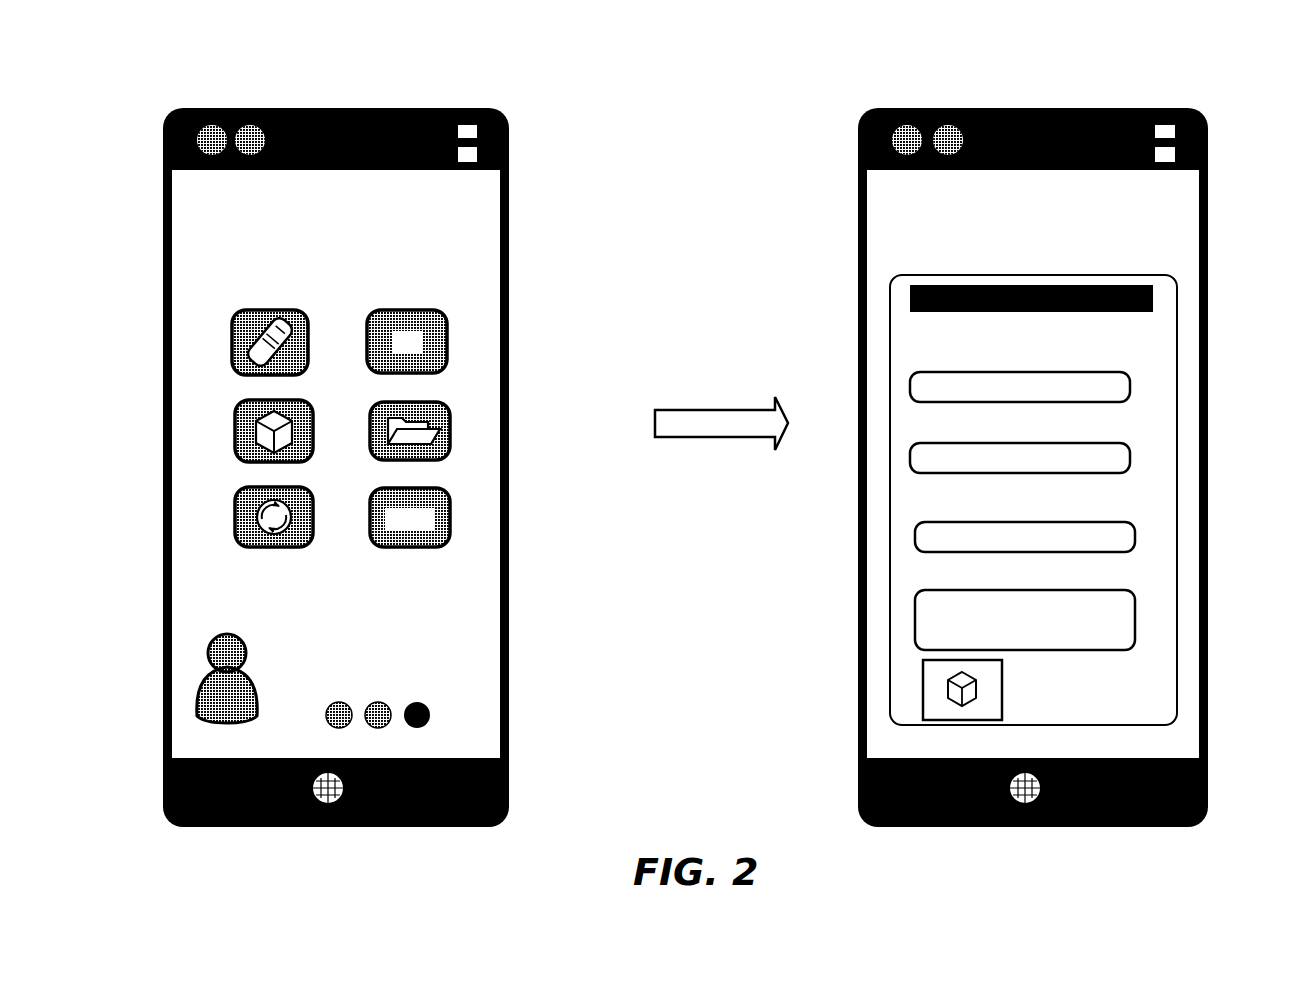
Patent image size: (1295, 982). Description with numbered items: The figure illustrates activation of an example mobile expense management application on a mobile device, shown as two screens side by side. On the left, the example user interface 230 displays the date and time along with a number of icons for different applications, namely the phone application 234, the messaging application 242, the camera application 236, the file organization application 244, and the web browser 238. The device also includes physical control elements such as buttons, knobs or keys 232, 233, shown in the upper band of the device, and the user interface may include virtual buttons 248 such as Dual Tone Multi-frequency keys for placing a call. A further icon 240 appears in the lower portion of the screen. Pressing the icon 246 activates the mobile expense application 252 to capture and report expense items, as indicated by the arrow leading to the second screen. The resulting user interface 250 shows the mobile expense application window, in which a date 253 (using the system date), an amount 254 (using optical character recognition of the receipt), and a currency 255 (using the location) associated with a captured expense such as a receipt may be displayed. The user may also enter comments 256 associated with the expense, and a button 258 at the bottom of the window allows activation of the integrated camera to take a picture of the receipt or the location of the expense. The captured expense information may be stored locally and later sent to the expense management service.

The user interface 230 is at (362, 90).
The physical control element 232 is at (197, 130).
The physical control element 233 is at (480, 150).
The phone application 234 is at (221, 312).
The camera application 236 is at (219, 407).
The web browser 238 is at (219, 492).
The contacts icon 240 is at (191, 635).
The messaging application 242 is at (458, 305).
The file organization application 244 is at (458, 393).
The icon 246 is at (465, 492).
The virtual buttons 248 is at (443, 695).
The user interface 250 is at (1083, 91).
The mobile expense application 252 is at (929, 269).
The date 253 is at (1127, 366).
The amount 254 is at (1127, 443).
The currency 255 is at (1126, 517).
The comments 256 is at (1128, 590).
The application icon button 258 is at (916, 666).